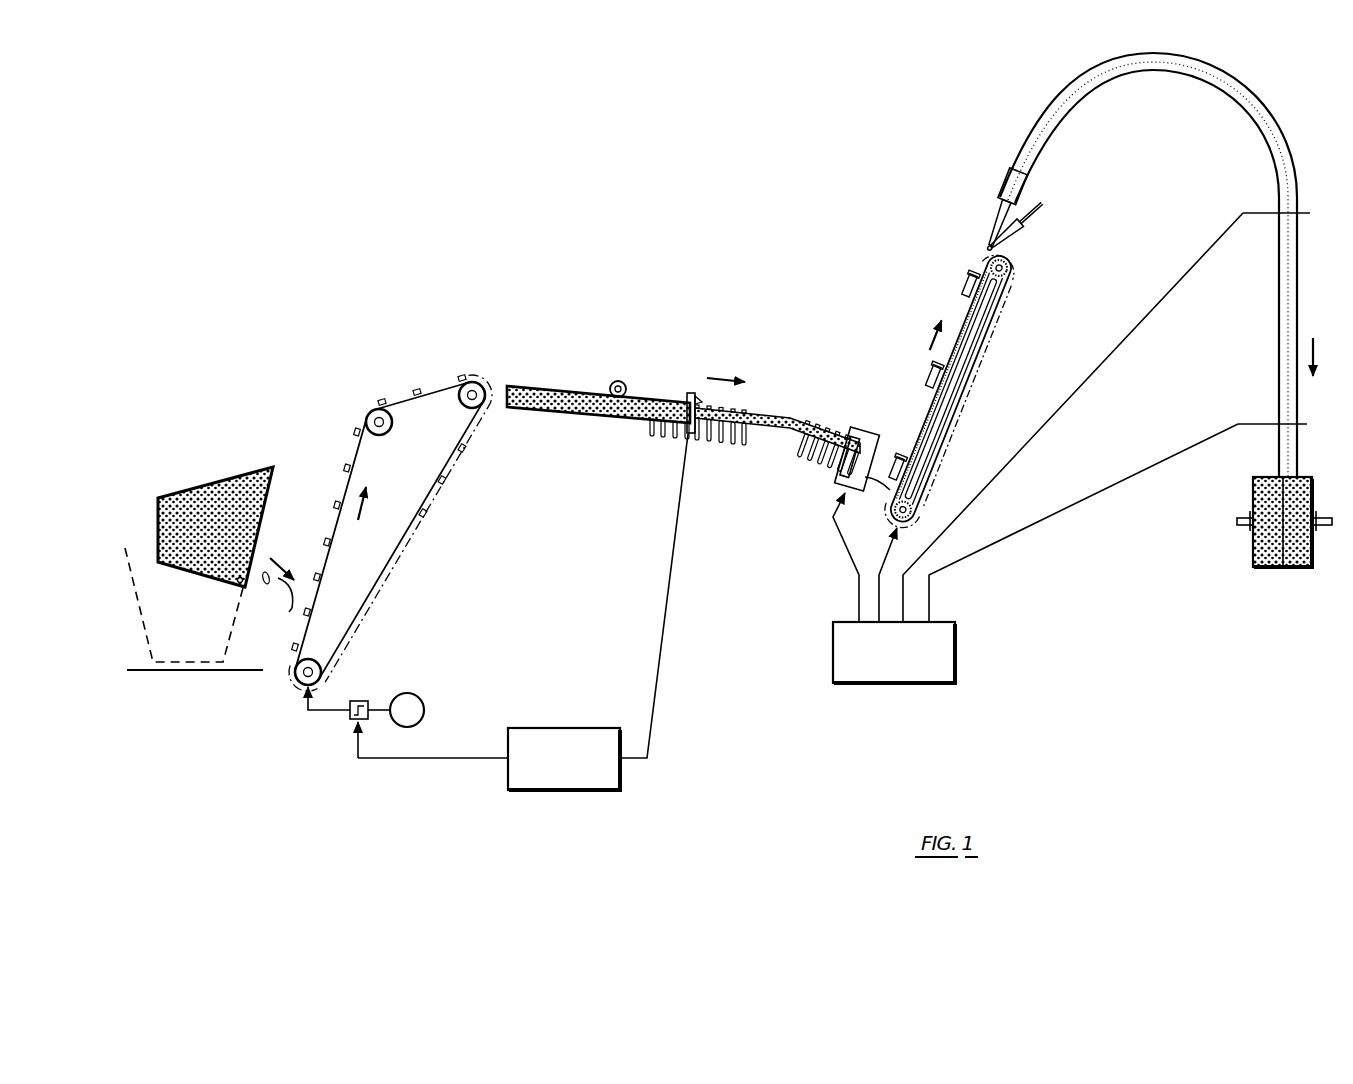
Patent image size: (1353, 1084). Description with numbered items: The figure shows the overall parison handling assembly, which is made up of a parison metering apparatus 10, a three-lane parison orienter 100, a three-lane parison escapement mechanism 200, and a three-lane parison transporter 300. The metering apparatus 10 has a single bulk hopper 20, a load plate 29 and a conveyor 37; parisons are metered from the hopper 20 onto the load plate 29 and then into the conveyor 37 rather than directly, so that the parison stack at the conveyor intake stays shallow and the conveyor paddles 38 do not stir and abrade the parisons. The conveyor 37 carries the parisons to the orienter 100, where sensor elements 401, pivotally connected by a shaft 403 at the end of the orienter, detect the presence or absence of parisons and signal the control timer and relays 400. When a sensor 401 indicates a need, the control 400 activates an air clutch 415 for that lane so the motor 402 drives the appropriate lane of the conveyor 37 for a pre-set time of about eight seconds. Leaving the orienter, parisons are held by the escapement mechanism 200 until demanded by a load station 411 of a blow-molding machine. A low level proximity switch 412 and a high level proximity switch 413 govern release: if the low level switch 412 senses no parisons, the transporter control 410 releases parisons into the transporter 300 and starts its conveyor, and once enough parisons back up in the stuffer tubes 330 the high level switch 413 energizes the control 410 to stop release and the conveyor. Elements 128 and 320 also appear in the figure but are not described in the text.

The parison metering apparatus 10 is at (233, 690).
The bulk hopper 20 is at (222, 536).
The load plate 29 is at (264, 585).
The conveyor 37 is at (356, 452).
The conveyor paddles 38 is at (343, 470).
The parison orienter 100 is at (563, 376).
The roller 128 is at (621, 381).
The parison escapement mechanism 200 is at (821, 412).
The parison transporter 300 is at (992, 378).
The nozzle 320 is at (1018, 232).
The stuffer tubes 330 is at (1062, 102).
The control timer and relays 400 is at (585, 770).
The sensor elements 401 is at (424, 704).
The motor 402 is at (696, 394).
The shaft 403 is at (692, 404).
The parison transporter control 410 is at (912, 663).
The load station 411 is at (1290, 553).
The low level proximity switch 412 is at (1307, 424).
The high level proximity switch 413 is at (1310, 213).
The air clutch 415 is at (362, 700).